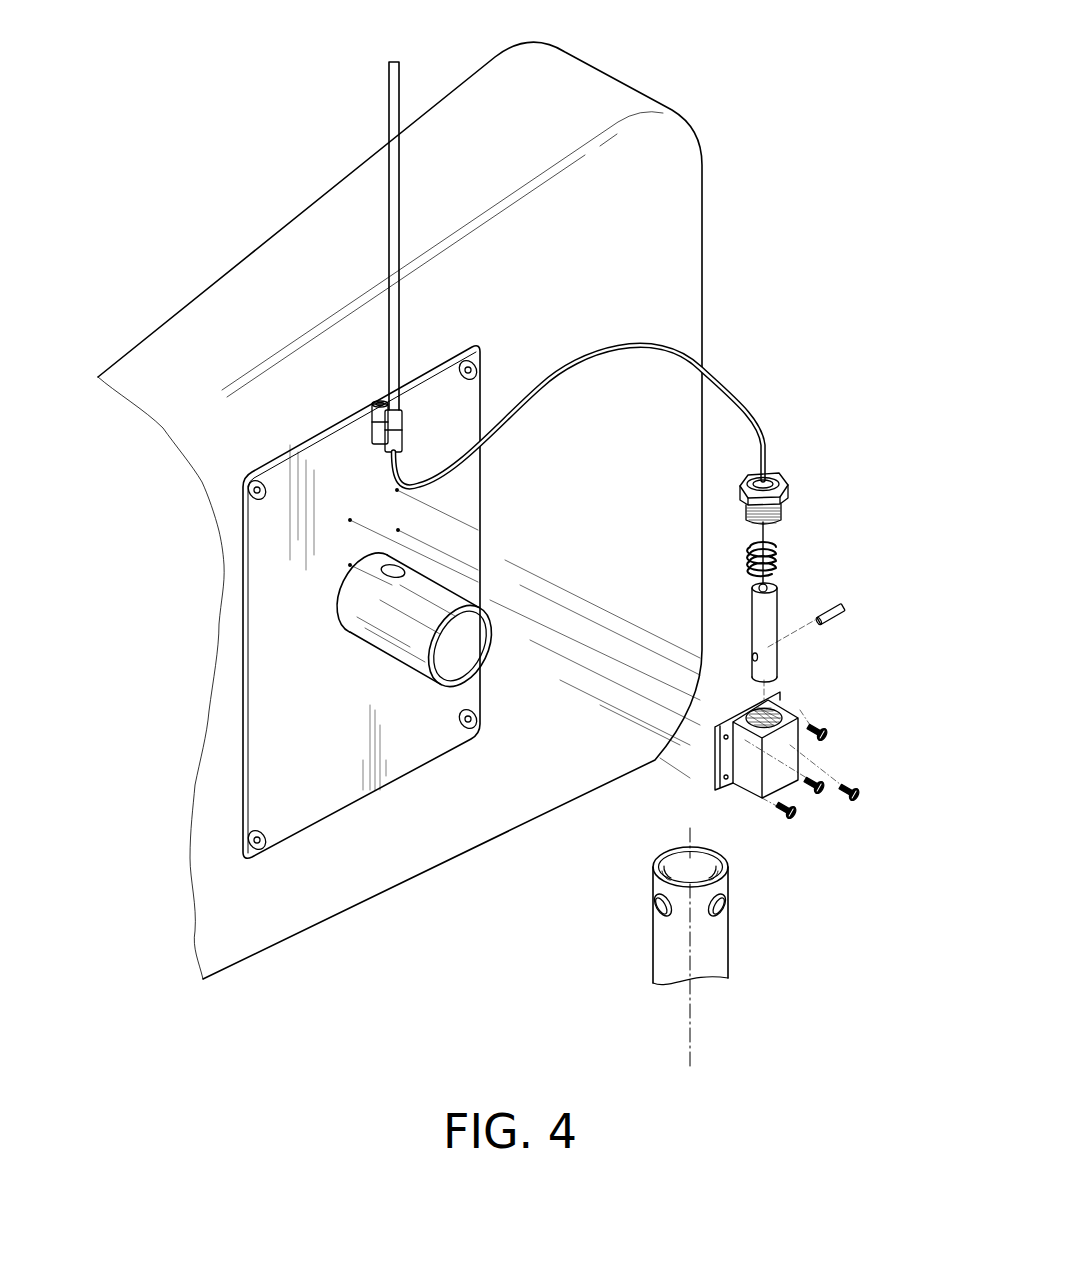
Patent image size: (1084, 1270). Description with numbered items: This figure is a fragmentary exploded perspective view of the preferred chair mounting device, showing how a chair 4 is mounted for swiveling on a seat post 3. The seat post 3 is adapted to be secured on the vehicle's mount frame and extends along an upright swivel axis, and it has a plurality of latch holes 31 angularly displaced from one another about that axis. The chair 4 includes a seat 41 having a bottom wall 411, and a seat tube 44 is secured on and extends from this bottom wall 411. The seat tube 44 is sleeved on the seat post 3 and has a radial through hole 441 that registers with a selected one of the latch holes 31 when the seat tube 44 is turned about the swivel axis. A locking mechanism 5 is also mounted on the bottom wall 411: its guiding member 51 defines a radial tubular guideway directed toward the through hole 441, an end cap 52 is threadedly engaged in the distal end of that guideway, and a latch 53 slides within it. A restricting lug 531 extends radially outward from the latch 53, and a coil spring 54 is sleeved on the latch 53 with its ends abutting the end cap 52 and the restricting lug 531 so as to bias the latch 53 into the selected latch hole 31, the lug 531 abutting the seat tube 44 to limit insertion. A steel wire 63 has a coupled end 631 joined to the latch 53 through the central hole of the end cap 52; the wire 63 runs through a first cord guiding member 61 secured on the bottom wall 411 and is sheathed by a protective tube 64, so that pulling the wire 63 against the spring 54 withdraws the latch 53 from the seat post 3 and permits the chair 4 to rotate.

The seat post 3 is at (690, 968).
The latch holes 31 is at (657, 855).
The chair 4 is at (456, 510).
The seat 41 is at (702, 183).
The bottom wall 411 is at (320, 798).
The seat tube 44 is at (411, 672).
The through hole 441 is at (385, 562).
The locking mechanism 5 is at (830, 697).
The guiding member 51 is at (798, 752).
The end cap 52 is at (783, 505).
The latch 53 is at (777, 657).
The restricting lug 531 is at (828, 603).
The coil spring 54 is at (773, 548).
The first cord guiding member 61 is at (372, 412).
The steel wire 63 is at (718, 374).
The coupled end 631 is at (772, 580).
The protective tube 64 is at (392, 118).